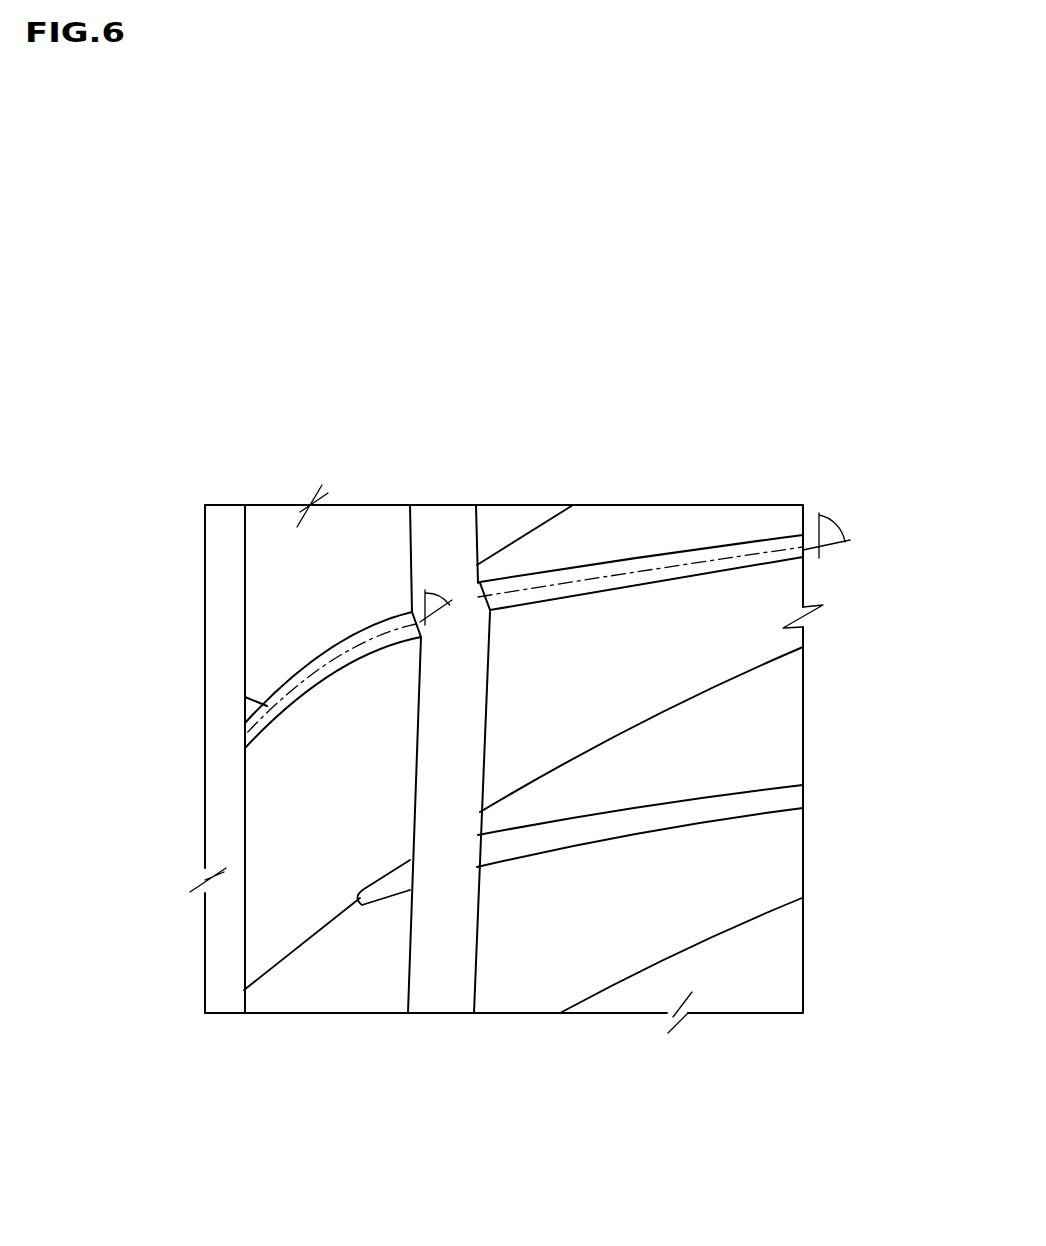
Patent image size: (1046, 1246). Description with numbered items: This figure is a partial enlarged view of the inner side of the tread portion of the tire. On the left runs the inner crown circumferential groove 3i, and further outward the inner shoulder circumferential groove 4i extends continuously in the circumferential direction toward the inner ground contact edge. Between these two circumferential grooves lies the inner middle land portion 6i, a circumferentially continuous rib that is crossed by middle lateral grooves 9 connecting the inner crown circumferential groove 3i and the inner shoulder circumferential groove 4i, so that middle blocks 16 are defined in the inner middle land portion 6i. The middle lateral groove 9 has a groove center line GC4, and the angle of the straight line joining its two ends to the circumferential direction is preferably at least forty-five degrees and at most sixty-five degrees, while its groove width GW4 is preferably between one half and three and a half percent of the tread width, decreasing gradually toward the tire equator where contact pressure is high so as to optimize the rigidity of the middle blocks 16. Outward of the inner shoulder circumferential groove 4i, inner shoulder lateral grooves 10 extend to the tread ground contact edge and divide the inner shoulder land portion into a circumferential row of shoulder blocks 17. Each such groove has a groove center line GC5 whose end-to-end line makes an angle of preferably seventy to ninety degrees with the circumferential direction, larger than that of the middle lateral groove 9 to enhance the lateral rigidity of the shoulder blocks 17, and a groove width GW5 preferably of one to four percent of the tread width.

The inner crown circumferential groove 3i is at (217, 578).
The inner middle land portion 6i is at (347, 517).
The inner shoulder circumferential groove 4i is at (443, 517).
The middle lateral groove 9 is at (277, 693).
The groove center line of the middle lateral groove GC4 is at (327, 675).
The groove width of the middle lateral groove GW4 is at (337, 610).
The shoulder lateral groove 10 is at (650, 555).
The groove center line of the inner shoulder lateral groove GC5 is at (545, 580).
The groove width of the shoulder lateral groove GW5 is at (685, 520).
The shoulder block 17 is at (740, 727).
The middle block 16 is at (268, 840).